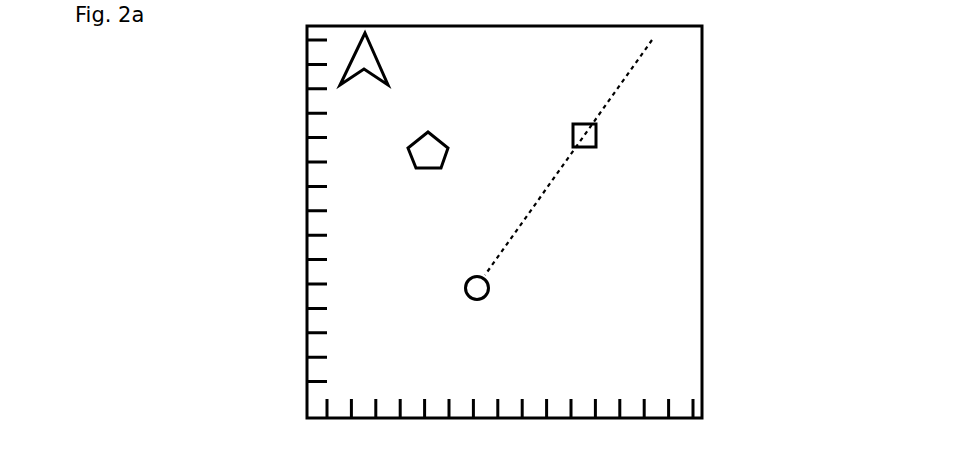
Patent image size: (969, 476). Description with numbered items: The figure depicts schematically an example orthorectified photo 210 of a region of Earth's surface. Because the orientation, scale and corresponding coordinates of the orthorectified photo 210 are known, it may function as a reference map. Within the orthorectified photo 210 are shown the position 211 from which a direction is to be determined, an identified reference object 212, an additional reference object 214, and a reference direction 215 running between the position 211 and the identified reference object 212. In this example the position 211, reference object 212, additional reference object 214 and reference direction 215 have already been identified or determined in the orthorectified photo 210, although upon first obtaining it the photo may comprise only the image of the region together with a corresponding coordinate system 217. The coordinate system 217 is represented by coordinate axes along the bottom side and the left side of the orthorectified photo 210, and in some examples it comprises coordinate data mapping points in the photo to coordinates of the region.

The orthorectified photo 210 is at (262, 117).
The position 211 is at (466, 279).
The identified reference object 212 is at (596, 133).
The additional reference object 214 is at (416, 168).
The reference direction 215 is at (533, 210).
The coordinate system 217 is at (327, 410).